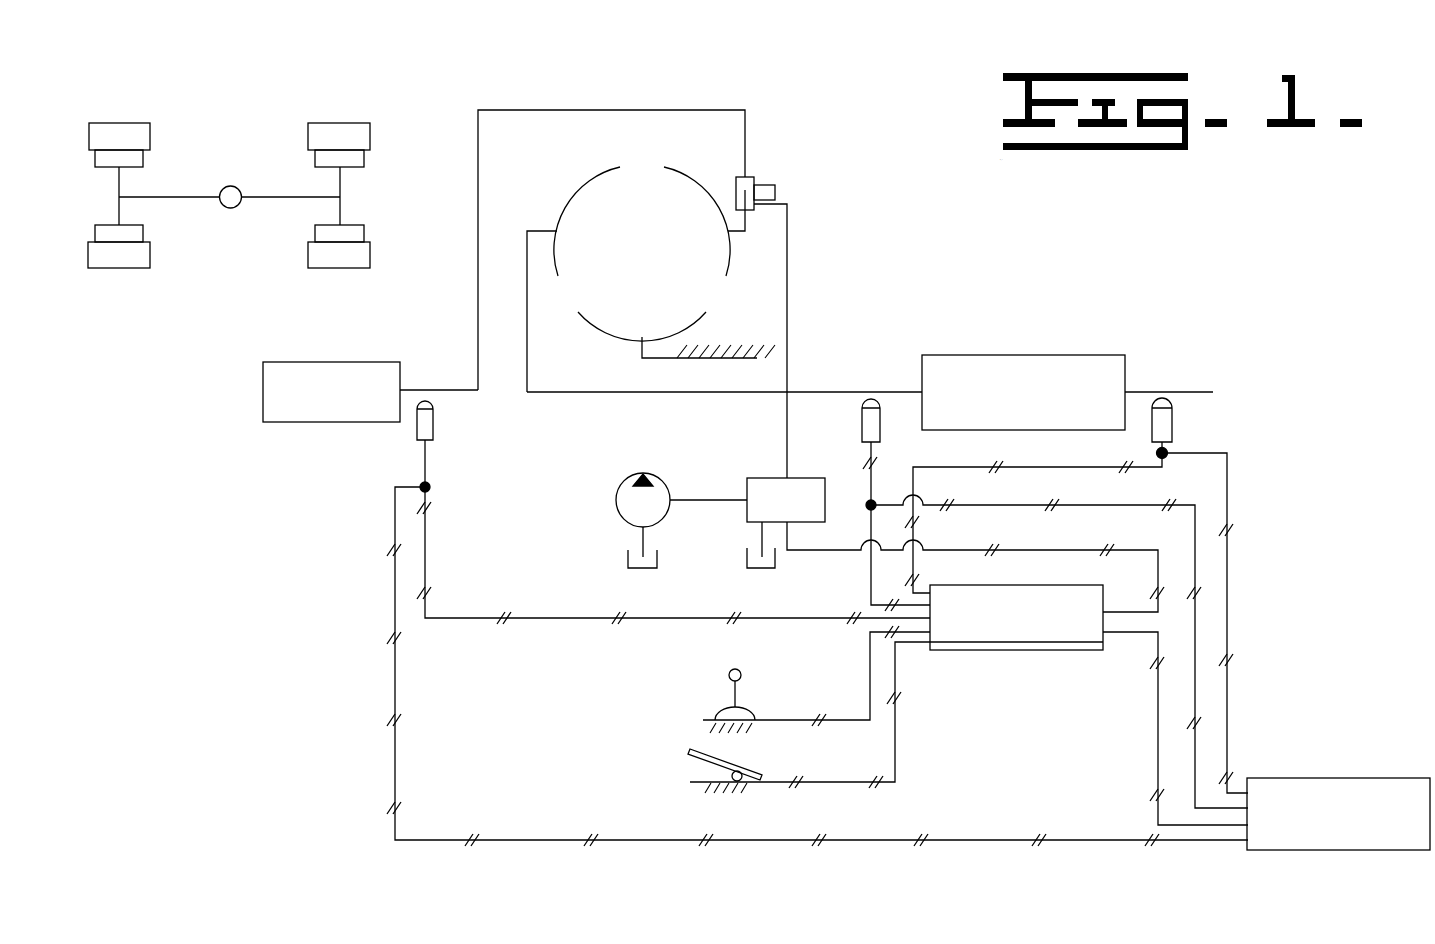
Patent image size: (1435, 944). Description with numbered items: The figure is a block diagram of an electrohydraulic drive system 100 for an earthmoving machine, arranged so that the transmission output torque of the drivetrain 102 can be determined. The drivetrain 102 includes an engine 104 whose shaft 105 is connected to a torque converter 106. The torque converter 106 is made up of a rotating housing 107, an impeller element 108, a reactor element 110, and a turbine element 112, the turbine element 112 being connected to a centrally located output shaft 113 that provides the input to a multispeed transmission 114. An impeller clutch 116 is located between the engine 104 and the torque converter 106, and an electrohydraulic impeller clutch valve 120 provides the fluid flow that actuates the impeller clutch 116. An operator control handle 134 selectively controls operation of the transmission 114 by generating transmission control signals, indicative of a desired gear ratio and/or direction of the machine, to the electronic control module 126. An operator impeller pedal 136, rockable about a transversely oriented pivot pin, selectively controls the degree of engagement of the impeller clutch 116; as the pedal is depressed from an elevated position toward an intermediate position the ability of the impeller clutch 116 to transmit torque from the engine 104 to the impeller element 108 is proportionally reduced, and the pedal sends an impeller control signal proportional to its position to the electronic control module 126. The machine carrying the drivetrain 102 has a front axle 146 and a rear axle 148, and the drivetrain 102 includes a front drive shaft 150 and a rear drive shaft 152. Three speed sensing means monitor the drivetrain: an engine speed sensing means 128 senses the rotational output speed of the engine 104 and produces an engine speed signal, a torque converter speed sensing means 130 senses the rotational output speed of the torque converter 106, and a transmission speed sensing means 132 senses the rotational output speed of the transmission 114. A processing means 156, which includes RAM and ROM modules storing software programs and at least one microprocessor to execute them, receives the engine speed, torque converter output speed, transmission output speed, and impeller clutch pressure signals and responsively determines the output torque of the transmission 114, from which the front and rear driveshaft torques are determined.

The vehicle control system 100 is at (640, 741).
The drivetrain 102 is at (1163, 239).
The engine 104 is at (338, 362).
The shaft 105 is at (438, 390).
The torque converter 106 is at (660, 299).
The rotating housing 107 is at (478, 120).
The impeller element 108 is at (694, 188).
The reactor element 110 is at (614, 336).
The turbine element 112 is at (570, 212).
The output shaft 113 is at (618, 392).
The multispeed transmission 114 is at (1097, 355).
The impeller clutch 116 is at (733, 177).
The electrohydraulic impeller clutch valve 120 is at (760, 484).
The electronic control module 126 is at (1072, 650).
The engine speed sensing means 128 is at (415, 425).
The torque converter speed sensing means 130 is at (852, 420).
The transmission speed sensing means 132 is at (1172, 428).
The operator control handle 134 is at (718, 717).
The operator impeller pedal 136 is at (697, 753).
The front axle 146 is at (122, 186).
The rear axle 148 is at (342, 177).
The front drive shaft 150 is at (180, 198).
The rear drive shaft 152 is at (260, 198).
The processing means 156 is at (1307, 850).